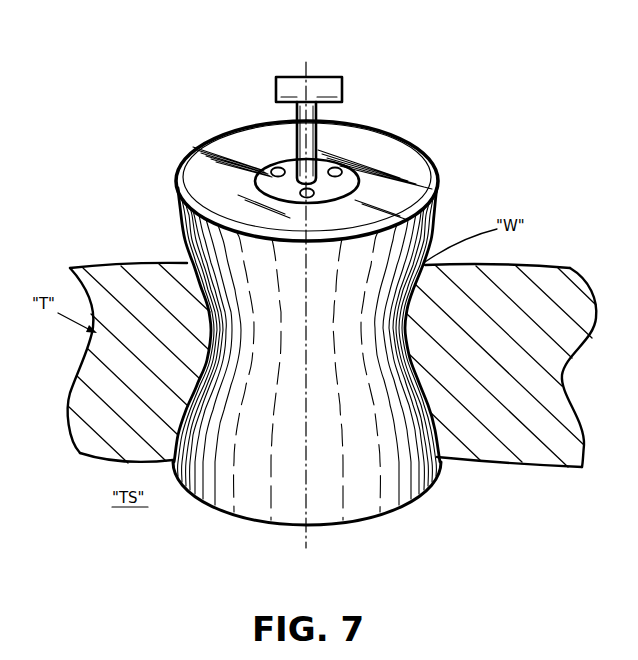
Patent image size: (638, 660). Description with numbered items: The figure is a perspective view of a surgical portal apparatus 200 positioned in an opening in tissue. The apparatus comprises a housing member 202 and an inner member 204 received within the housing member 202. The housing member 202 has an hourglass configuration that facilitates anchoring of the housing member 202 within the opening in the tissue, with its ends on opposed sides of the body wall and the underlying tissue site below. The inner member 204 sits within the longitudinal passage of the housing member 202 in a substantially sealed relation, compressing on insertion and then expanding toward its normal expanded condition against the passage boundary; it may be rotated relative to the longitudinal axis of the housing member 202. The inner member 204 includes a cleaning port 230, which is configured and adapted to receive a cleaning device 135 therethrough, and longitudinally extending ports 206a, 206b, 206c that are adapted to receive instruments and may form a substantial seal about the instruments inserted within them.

The surgical portal apparatus 200 is at (312, 300).
The cleaning device 135 is at (345, 73).
The housing member 202 is at (218, 143).
The inner member 204 is at (362, 178).
The longitudinally extending port 206a is at (338, 167).
The longitudinally extending port 206b is at (366, 172).
The longitudinally extending port 206c is at (240, 158).
The cleaning port 230 is at (360, 178).